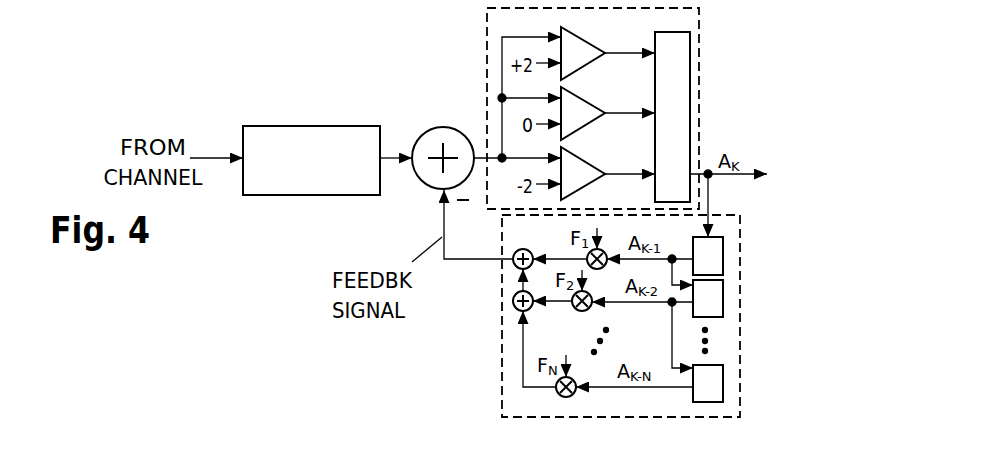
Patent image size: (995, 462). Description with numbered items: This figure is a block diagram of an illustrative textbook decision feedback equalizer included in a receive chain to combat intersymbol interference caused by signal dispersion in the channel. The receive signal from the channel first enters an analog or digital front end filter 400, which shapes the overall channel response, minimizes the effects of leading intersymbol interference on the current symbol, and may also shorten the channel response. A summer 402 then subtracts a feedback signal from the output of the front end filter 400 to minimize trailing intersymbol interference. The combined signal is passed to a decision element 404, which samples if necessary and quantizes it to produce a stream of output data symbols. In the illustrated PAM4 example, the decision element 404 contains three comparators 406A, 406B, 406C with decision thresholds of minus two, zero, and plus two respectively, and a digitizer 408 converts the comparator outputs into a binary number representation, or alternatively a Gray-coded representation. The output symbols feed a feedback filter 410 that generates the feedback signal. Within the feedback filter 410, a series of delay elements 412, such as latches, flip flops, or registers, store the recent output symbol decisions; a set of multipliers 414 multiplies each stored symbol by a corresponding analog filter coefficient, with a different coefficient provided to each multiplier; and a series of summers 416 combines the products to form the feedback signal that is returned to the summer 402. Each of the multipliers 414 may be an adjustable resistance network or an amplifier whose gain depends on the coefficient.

The front end filter 400 is at (297, 196).
The summer 402 is at (425, 189).
The decision element 404 is at (486, 68).
The comparator 406A is at (585, 162).
The comparator 406B is at (584, 101).
The comparator 406C is at (584, 42).
The digitizer 408 is at (656, 188).
The feedback filter 410 is at (501, 393).
The delay elements 412 is at (723, 253).
The multipliers 414 is at (603, 267).
The summers 416 is at (513, 300).